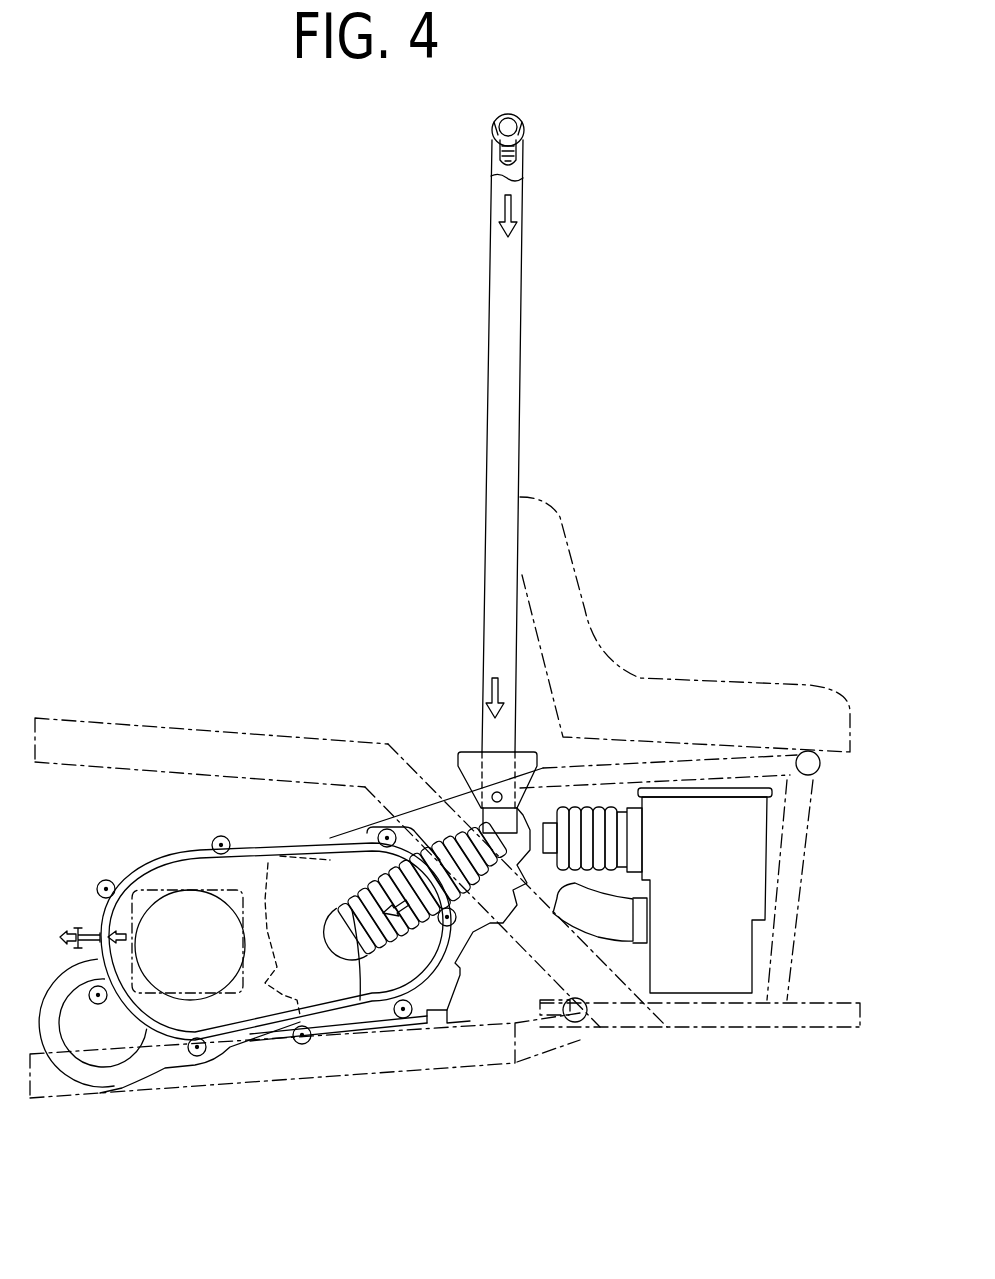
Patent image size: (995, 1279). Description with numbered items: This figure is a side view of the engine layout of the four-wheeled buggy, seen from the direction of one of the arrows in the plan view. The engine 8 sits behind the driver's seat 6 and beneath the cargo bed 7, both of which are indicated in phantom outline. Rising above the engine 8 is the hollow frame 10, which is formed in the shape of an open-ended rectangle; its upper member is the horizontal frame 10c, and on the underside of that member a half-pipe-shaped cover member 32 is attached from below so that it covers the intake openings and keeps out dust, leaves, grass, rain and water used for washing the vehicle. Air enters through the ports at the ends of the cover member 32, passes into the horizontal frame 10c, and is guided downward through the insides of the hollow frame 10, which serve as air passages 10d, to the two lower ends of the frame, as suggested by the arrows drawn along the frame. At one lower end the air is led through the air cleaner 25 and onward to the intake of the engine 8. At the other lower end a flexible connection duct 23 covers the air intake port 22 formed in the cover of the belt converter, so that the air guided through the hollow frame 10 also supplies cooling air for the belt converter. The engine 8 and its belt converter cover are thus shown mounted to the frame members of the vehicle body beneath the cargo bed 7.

The driver's seat 6 is at (620, 675).
The cargo bed 7 is at (117, 745).
The engine 8 is at (262, 830).
The hollow frame 10 is at (508, 473).
The horizontal frame 10c is at (522, 126).
The air passages 10d is at (507, 400).
The air intake port 22 is at (357, 950).
The flexible connection duct 23 is at (497, 878).
The air cleaner 25 is at (722, 985).
The cover member 32 is at (498, 158).